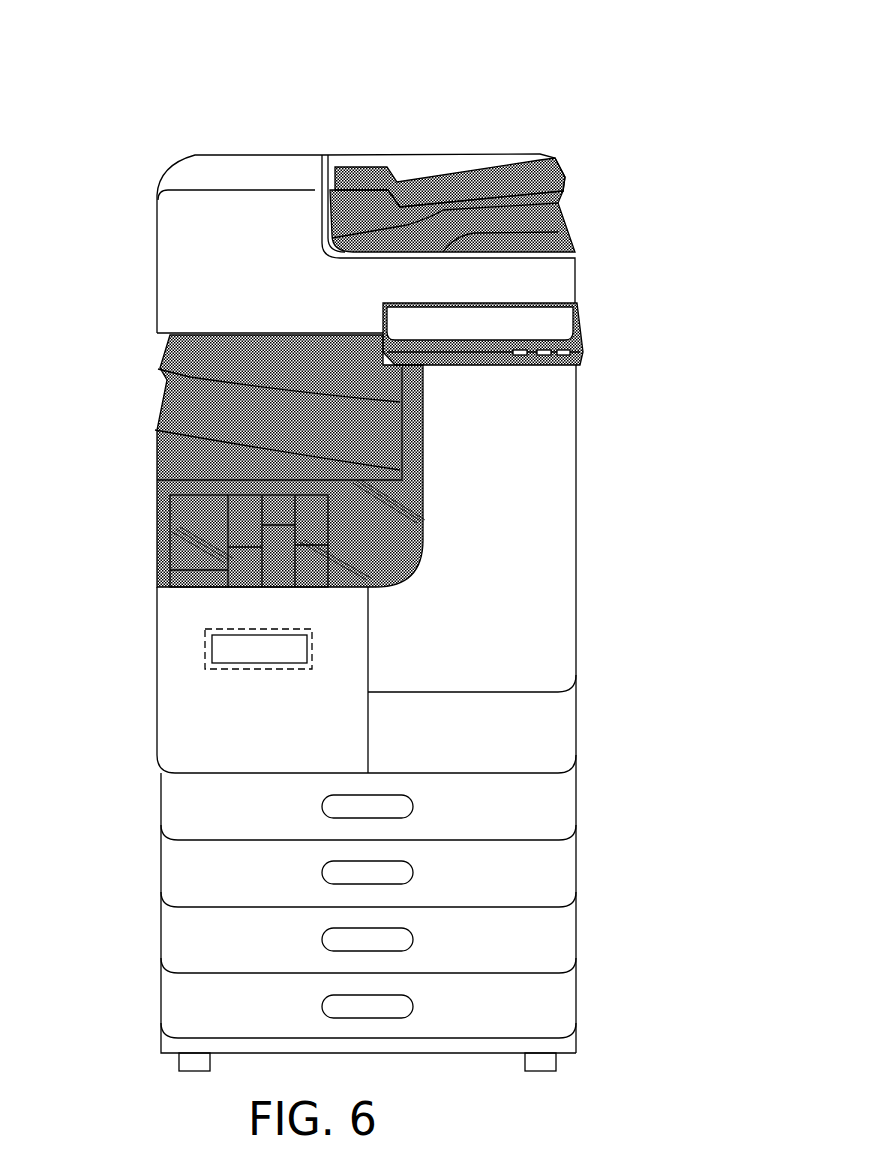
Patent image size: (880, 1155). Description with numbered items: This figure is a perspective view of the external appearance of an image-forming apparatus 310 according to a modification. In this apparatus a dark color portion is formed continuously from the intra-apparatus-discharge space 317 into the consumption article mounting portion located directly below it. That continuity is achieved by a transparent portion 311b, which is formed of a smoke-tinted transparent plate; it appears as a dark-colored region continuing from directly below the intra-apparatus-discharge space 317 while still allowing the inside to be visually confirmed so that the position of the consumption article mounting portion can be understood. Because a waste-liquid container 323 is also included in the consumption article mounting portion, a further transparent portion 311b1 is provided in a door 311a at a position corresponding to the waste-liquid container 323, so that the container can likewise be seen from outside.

The image-forming apparatus 310 is at (467, 104).
The intra-apparatus-discharge space 317 is at (172, 383).
The transparent portion 311b is at (167, 518).
The door 311a is at (187, 618).
The further transparent portion 311b1 is at (204, 659).
The waste-liquid container 323 is at (258, 650).